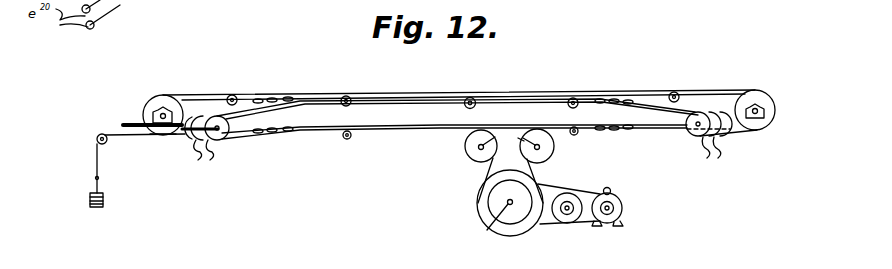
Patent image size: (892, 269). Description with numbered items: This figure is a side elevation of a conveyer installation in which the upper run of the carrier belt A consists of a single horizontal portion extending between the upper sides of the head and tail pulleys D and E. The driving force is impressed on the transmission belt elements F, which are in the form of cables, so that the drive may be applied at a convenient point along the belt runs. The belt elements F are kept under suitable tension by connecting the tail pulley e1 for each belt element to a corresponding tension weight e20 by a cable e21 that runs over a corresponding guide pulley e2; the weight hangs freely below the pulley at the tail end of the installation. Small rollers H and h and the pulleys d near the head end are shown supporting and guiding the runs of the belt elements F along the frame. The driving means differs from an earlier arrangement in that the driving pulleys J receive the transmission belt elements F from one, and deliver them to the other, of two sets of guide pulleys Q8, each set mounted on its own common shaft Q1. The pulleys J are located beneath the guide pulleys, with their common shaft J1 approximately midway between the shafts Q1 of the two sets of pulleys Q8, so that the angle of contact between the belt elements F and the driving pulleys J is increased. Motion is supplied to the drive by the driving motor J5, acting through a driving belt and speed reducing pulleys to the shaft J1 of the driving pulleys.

The carrier belt A is at (645, 92).
The transmission belt elements F is at (412, 98).
The tail pulley E is at (143, 100).
The head pulley D is at (772, 100).
The tail pulley for belt element e1 is at (205, 142).
The guide pulleys d is at (709, 136).
The rollers H is at (288, 97).
The sheave h is at (346, 140).
The guide pulley e2 is at (97, 136).
The cable e21 is at (98, 160).
The tension weight e20 is at (104, 198).
The guide pulleys Q8 is at (562, 165).
The shaft Q1 is at (514, 136).
The driving pulleys J is at (480, 200).
The shaft J1 is at (481, 212).
The driving motor J5 is at (621, 205).